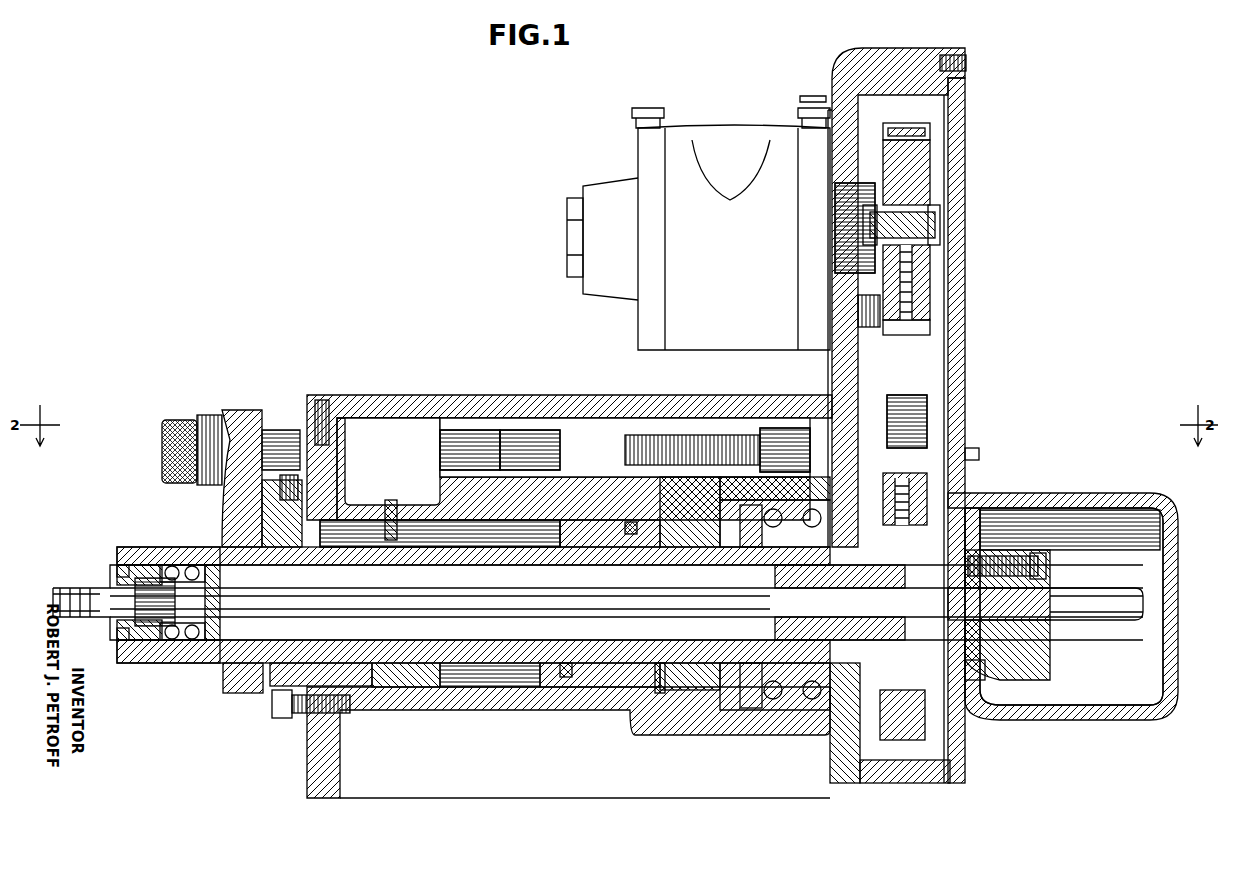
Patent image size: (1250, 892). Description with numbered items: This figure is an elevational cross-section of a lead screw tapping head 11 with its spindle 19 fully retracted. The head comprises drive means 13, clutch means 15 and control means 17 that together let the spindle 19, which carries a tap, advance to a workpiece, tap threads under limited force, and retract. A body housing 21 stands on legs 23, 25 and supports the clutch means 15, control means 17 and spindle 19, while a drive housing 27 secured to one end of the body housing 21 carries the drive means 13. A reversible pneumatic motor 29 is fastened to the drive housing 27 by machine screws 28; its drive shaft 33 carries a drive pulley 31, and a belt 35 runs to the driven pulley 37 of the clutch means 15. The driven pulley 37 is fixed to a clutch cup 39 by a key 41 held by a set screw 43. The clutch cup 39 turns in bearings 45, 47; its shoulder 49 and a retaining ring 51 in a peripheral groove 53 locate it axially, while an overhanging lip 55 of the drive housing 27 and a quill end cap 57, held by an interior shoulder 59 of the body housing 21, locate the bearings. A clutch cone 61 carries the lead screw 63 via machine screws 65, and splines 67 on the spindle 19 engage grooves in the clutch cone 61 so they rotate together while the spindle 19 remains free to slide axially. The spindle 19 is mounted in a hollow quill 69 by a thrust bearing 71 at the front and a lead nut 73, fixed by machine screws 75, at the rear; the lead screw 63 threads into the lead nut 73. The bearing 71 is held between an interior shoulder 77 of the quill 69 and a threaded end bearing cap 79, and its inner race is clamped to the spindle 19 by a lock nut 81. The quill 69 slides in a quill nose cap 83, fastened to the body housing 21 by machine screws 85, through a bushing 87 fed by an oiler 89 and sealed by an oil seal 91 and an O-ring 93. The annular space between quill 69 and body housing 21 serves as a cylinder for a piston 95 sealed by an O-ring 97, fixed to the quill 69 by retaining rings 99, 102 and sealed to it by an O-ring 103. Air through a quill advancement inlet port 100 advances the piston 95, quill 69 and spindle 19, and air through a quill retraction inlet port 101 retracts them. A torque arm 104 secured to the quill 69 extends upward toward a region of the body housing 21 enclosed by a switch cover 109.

The lead screw tapping head 11 is at (476, 756).
The drive means 13 is at (803, 99).
The clutch means 15 is at (990, 545).
The control means 17 is at (618, 395).
The spindle 19 is at (108, 590).
The body housing 21 is at (340, 500).
The leg 23 is at (325, 770).
The leg 25 is at (832, 780).
The drive housing 27 is at (882, 70).
The machine screws 28 is at (870, 305).
The pneumatic motor 29 is at (728, 148).
The drive pulley 31 is at (930, 135).
The drive shaft 33 is at (936, 225).
The belt 35 is at (958, 365).
The driven pulley 37 is at (930, 500).
The clutch cup 39 is at (950, 550).
The key 41 is at (985, 475).
The set screw 43 is at (980, 452).
The bearing 45 is at (792, 700).
The bearing 47 is at (768, 700).
The shoulder 49 is at (900, 742).
The retaining ring 51 is at (748, 672).
The peripheral groove 53 is at (735, 672).
The overhanging lip 55 is at (845, 505).
The quill end cap 57 is at (738, 485).
The interior shoulder 59 is at (610, 677).
The clutch cone 61 is at (1010, 560).
The lead screw 63 is at (1030, 692).
The machine screws 65 is at (1128, 500).
The splines 67 is at (1085, 625).
The quill 69 is at (186, 655).
The bearing 71 is at (174, 550).
The lead nut 73 is at (1000, 682).
The machine screws 75 is at (990, 700).
The interior shoulder 77 is at (240, 412).
The end bearing cap 79 is at (120, 650).
The lock nut 81 is at (178, 642).
The quill nose cap 83 is at (360, 520).
The machine screws 85 is at (285, 708).
The bushing 87 is at (270, 690).
The oiler 89 is at (320, 425).
The oil seal 91 is at (245, 680).
The O-ring 93 is at (358, 687).
The piston 95 is at (520, 445).
The O-ring 97 is at (595, 525).
The retaining ring 99 is at (530, 690).
The quill advancement inlet port 100 is at (672, 435).
The quill retraction inlet port 101 is at (393, 525).
The retaining ring 102 is at (668, 692).
The O-ring 103 is at (570, 670).
The torque arm 104 is at (232, 515).
The switch cover 109 is at (465, 428).